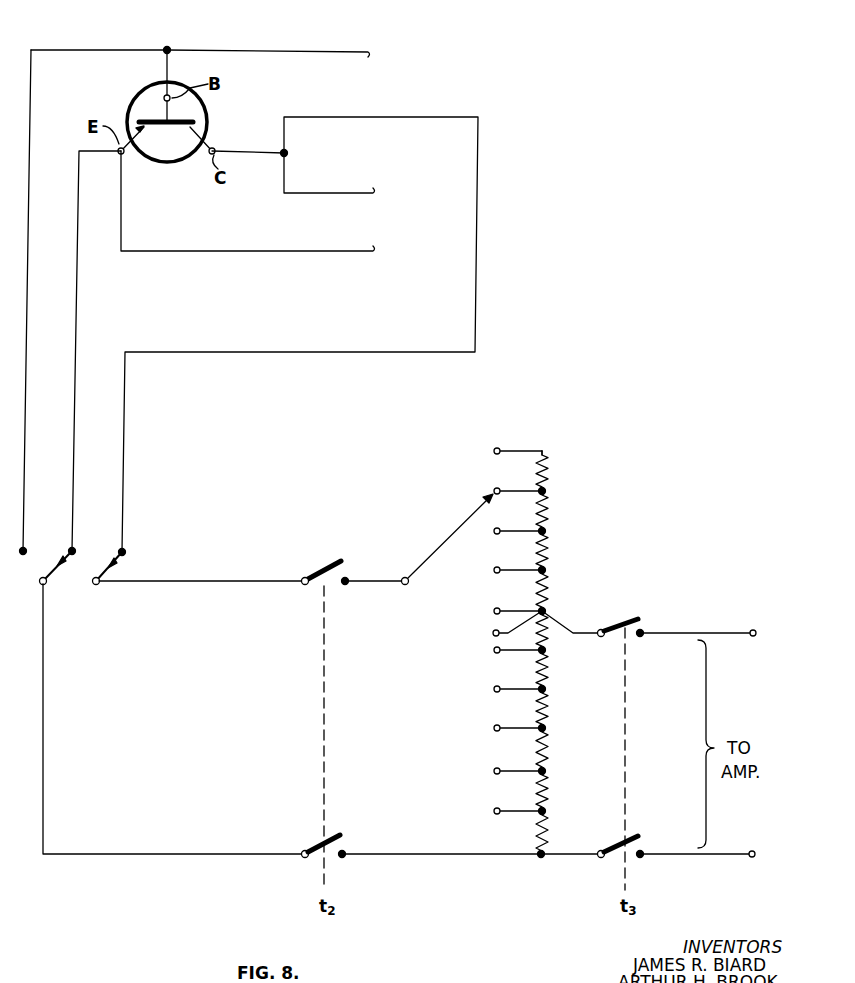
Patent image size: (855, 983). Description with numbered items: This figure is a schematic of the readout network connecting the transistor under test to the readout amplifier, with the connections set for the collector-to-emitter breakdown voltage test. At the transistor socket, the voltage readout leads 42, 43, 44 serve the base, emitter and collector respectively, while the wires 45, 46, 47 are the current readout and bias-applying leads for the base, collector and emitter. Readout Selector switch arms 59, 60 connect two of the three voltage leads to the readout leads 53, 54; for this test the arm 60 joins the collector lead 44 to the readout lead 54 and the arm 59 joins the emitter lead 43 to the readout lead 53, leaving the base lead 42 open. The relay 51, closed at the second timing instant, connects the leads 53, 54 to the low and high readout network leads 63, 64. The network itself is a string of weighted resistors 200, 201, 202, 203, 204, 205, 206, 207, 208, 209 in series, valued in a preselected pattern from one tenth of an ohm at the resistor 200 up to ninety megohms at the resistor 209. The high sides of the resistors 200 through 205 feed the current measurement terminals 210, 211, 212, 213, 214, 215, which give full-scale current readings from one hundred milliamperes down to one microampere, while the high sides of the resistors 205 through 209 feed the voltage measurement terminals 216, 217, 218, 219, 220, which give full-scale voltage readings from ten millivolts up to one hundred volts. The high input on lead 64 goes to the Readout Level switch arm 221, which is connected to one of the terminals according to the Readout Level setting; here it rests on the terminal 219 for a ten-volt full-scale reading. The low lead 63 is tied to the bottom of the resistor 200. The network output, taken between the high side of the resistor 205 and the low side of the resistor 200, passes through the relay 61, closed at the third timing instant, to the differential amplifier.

The base voltage readout lead 42 is at (30, 249).
The emitter voltage readout lead 43 is at (77, 287).
The collector voltage readout lead 44 is at (476, 272).
The base current readout and bias-applying lead 45 is at (316, 52).
The collector current readout and bias-applying lead 46 is at (346, 193).
The emitter current readout and bias-applying lead 47 is at (330, 252).
The relay 51 is at (322, 728).
The readout lead 53 is at (193, 854).
The readout lead 54 is at (246, 581).
The Readout Selector switch arm 59 is at (47, 583).
The Readout Selector switch arm 60 is at (104, 574).
The relay 61 is at (626, 713).
The low readout network lead 63 is at (390, 855).
The high readout network lead 64 is at (369, 581).
The weighted resistor 200 is at (549, 826).
The weighted resistor 201 is at (549, 785).
The weighted resistor 202 is at (549, 746).
The weighted resistor 203 is at (549, 706).
The weighted resistor 204 is at (549, 670).
The weighted resistor 205 is at (549, 648).
The weighted resistor 206 is at (549, 585).
The weighted resistor 207 is at (549, 546).
The weighted resistor 208 is at (549, 507).
The weighted resistor 209 is at (549, 468).
The current measurement terminal 210 is at (492, 810).
The current measurement terminal 211 is at (493, 770).
The current measurement terminal 212 is at (491, 727).
The current measurement terminal 213 is at (492, 688).
The current measurement terminal 214 is at (494, 650).
The current measurement terminal 215 is at (492, 633).
The voltage measurement terminal 216 is at (493, 610).
The voltage measurement terminal 217 is at (488, 569).
The voltage measurement terminal 218 is at (494, 530).
The voltage measurement terminal 219 is at (494, 491).
The voltage measurement terminal 220 is at (493, 450).
The Readout Level switch arm 221 is at (456, 534).